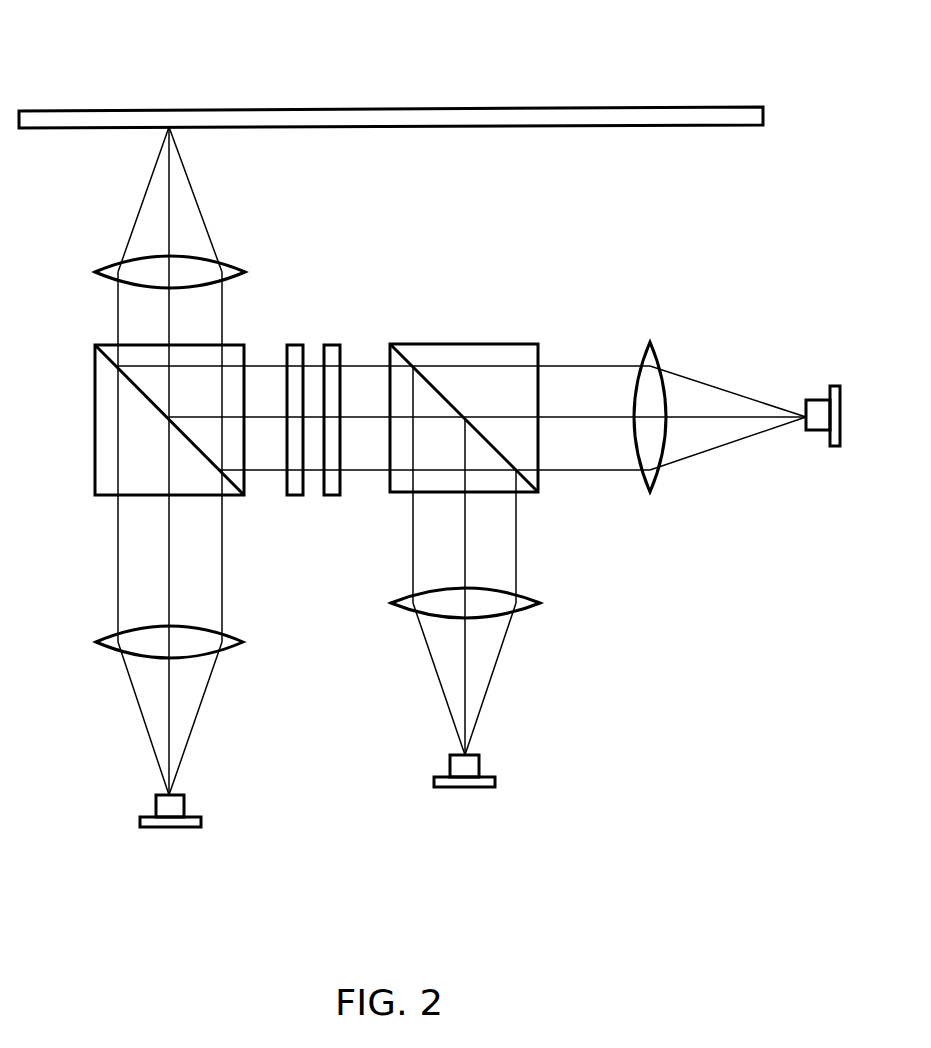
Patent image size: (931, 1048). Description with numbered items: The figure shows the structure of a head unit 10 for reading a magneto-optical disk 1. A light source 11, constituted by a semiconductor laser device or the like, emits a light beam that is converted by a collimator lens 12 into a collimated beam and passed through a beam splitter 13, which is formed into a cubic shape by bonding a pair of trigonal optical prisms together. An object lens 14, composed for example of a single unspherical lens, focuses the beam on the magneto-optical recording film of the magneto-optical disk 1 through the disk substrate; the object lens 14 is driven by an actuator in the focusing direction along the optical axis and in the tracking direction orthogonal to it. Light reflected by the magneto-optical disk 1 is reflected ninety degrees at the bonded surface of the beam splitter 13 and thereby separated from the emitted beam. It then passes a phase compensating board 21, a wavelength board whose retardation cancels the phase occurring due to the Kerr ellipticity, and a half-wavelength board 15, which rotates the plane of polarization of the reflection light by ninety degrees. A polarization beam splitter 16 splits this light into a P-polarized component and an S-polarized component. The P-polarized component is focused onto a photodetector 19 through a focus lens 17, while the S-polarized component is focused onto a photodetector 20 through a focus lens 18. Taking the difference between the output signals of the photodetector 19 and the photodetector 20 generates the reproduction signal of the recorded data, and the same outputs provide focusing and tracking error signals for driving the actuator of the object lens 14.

The magneto-optical disk 1 is at (682, 105).
The head unit 10 is at (572, 33).
The light source 11 is at (185, 802).
The collimator lens 12 is at (230, 637).
The beam splitter 13 is at (95, 478).
The object lens 14 is at (110, 267).
The λ/2 wavelength board 15 is at (328, 343).
The polarization beam splitter 16 is at (538, 344).
The focus lens 17 is at (658, 358).
The focus lens 18 is at (538, 598).
The photodetector 19 is at (818, 400).
The photodetector 20 is at (480, 765).
The phase compensating board 21 is at (293, 343).